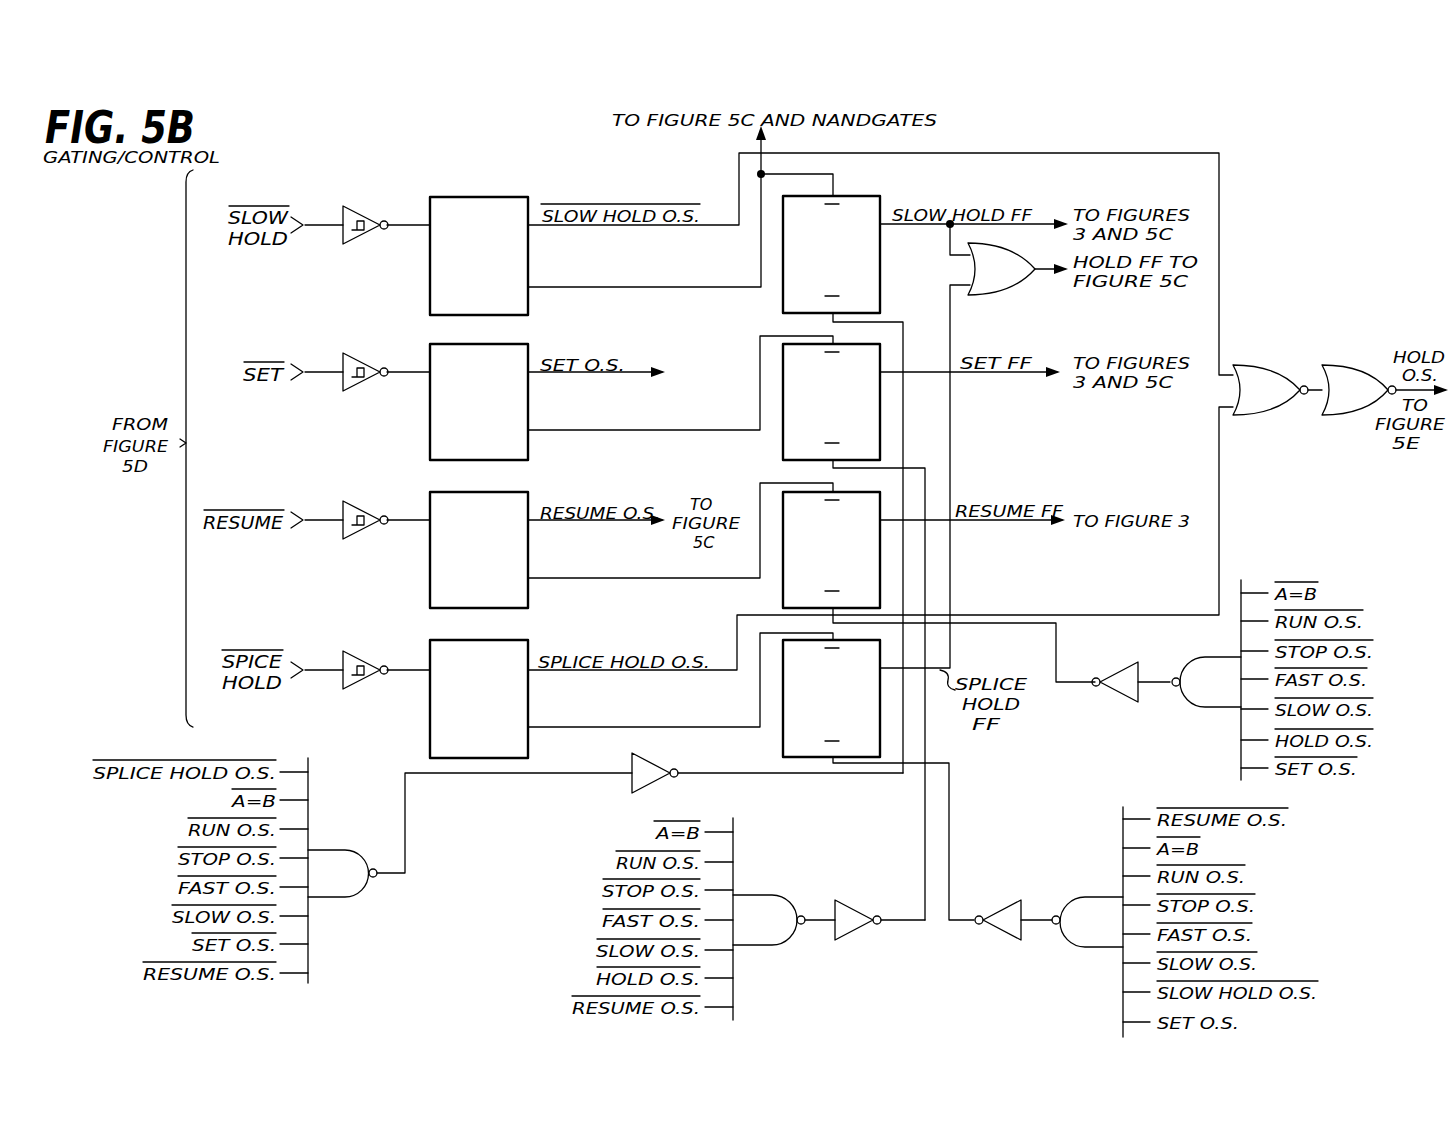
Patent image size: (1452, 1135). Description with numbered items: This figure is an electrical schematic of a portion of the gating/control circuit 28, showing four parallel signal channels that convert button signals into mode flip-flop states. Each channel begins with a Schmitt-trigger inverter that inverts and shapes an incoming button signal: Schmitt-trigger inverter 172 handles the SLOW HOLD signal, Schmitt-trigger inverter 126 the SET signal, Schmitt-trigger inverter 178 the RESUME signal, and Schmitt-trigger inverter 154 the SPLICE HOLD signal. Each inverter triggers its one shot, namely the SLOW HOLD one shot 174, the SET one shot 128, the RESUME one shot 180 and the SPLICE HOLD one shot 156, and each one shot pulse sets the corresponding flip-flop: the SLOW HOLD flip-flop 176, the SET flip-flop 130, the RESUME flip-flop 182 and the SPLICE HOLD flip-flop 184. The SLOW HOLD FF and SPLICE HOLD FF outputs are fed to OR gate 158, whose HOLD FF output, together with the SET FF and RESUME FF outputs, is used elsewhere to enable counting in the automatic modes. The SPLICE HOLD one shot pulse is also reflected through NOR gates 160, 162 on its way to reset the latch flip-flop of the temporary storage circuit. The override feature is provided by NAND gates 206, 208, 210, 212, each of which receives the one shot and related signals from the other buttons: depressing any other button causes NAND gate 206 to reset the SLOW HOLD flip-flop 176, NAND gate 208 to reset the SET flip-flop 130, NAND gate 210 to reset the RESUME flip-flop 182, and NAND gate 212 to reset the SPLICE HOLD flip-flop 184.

The gating/control circuit 28 is at (475, 157).
The Schmitt-trigger inverter 172 is at (358, 210).
The SLOW HOLD one shot 174 is at (498, 203).
The SLOW HOLD flip-flop 176 is at (845, 200).
The Schmitt-trigger inverter 126 is at (366, 357).
The SET one shot 128 is at (522, 348).
The SET flip-flop 130 is at (783, 451).
The Schmitt-trigger inverter 178 is at (354, 505).
The RESUME one shot 180 is at (520, 497).
The RESUME flip-flop 182 is at (783, 596).
The Schmitt-trigger inverter 154 is at (358, 655).
The SPLICE HOLD one shot 156 is at (520, 648).
The SPLICE HOLD flip-flop 184 is at (783, 748).
The OR gate 158 is at (985, 298).
The NOR gate 160 is at (1272, 376).
The NOR gate 162 is at (1352, 372).
The NAND gate 206 is at (352, 850).
The NAND gate 208 is at (770, 898).
The NAND gate 210 is at (1195, 667).
The NAND gate 212 is at (1088, 898).